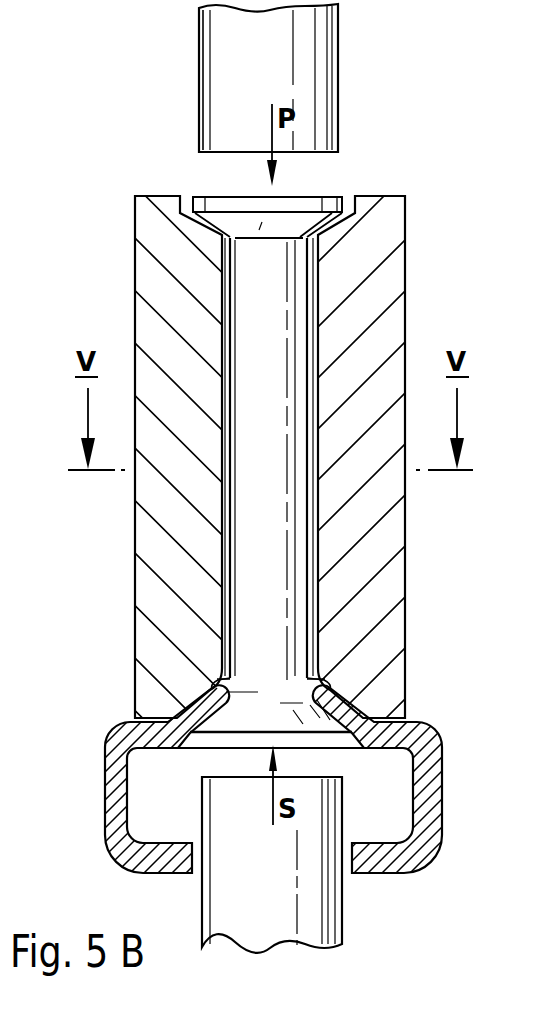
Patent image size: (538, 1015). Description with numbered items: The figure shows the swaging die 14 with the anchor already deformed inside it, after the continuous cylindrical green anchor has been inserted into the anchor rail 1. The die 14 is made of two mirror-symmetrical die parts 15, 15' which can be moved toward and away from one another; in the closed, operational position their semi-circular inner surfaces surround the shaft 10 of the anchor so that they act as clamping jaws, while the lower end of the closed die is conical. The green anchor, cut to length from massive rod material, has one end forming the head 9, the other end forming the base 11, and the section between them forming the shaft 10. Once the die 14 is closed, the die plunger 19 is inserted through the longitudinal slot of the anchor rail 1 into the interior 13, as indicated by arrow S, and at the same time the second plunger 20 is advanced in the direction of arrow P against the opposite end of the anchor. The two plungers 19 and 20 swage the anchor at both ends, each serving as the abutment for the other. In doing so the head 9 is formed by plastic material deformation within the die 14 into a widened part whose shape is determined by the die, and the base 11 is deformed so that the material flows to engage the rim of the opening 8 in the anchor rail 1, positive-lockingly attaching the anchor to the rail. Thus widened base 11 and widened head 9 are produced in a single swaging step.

The anchor rail 1 is at (104, 710).
The opening 8 is at (242, 702).
The head 9 is at (317, 200).
The shaft 10 is at (282, 424).
The base 11 is at (257, 720).
The interior 13 is at (394, 825).
The swaging die 14 is at (171, 178).
The die part 15 is at (151, 457).
The die part 15' is at (385, 457).
The die plunger 19 is at (322, 931).
The second plunger 20 is at (222, 58).